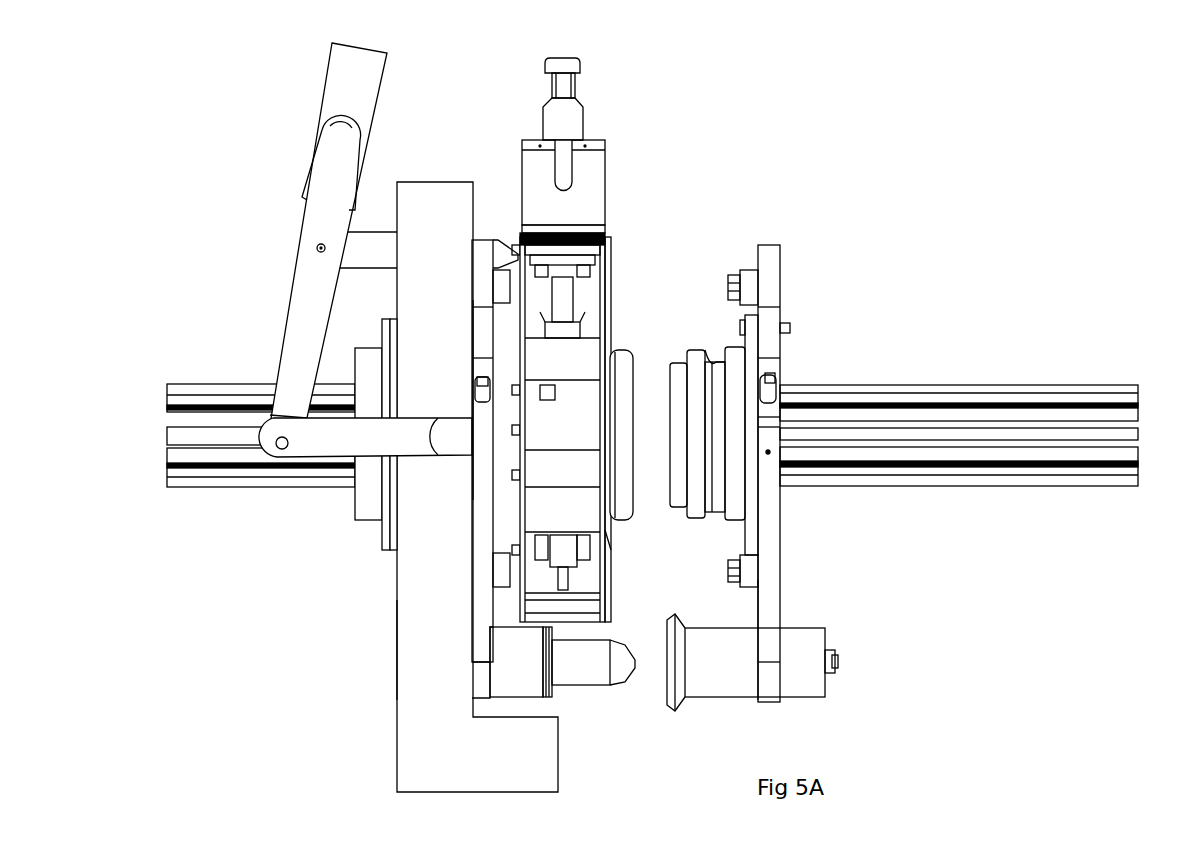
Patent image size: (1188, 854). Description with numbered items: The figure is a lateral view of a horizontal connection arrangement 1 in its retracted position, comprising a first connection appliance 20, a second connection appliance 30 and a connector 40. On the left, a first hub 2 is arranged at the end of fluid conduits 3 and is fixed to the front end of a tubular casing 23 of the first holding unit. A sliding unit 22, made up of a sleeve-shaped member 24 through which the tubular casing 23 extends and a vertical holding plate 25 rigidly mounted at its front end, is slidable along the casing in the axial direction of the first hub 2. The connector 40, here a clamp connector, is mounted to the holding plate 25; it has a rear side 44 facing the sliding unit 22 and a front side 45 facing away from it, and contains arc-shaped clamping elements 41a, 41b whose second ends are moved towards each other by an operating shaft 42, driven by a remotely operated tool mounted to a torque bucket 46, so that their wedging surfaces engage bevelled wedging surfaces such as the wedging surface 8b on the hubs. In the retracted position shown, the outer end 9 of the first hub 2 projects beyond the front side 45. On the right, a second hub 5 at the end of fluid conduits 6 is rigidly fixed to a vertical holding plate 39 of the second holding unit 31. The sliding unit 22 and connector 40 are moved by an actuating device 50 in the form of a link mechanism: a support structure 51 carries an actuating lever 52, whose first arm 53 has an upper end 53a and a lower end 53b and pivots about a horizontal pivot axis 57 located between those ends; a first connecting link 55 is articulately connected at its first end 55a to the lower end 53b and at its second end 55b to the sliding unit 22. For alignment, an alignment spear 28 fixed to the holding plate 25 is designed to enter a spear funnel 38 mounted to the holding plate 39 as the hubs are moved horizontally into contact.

The horizontal connection arrangement 1 is at (786, 108).
The first hub 2 is at (598, 503).
The fluid conduits 3 is at (190, 398).
The second hub 5 is at (692, 350).
The fluid conduits 6 is at (925, 398).
The bevelled wedging surface 8b is at (712, 360).
The outer end 9 is at (633, 382).
The first connection appliance 20 is at (476, 155).
The sliding unit 22 is at (463, 488).
The tubular casing 23 is at (370, 355).
The sleeve-shaped member 24 is at (482, 358).
The vertical holding plate 25 is at (478, 637).
The alignment spear 28 is at (585, 672).
The second connection appliance 30 is at (808, 224).
The second holding unit 31 is at (790, 298).
The spear funnel 38 is at (700, 690).
The vertical holding plate 39 is at (770, 596).
The connector 40 is at (615, 217).
The clamping element 41a is at (590, 322).
The clamping element 41b is at (583, 572).
The operating shaft 42 is at (568, 292).
The rear side 44 is at (493, 548).
The front side 45 is at (607, 540).
The torque bucket 46 is at (597, 170).
The actuating device 50 is at (258, 232).
The support structure 51 is at (407, 628).
The actuating lever 52 is at (297, 207).
The first arm 53 is at (296, 318).
The upper end 53a is at (338, 128).
The lower end 53b is at (268, 410).
The first connecting link 55 is at (328, 462).
The first end 55a is at (275, 452).
The second end 55b is at (437, 420).
The horizontal pivot axis 57 is at (316, 250).